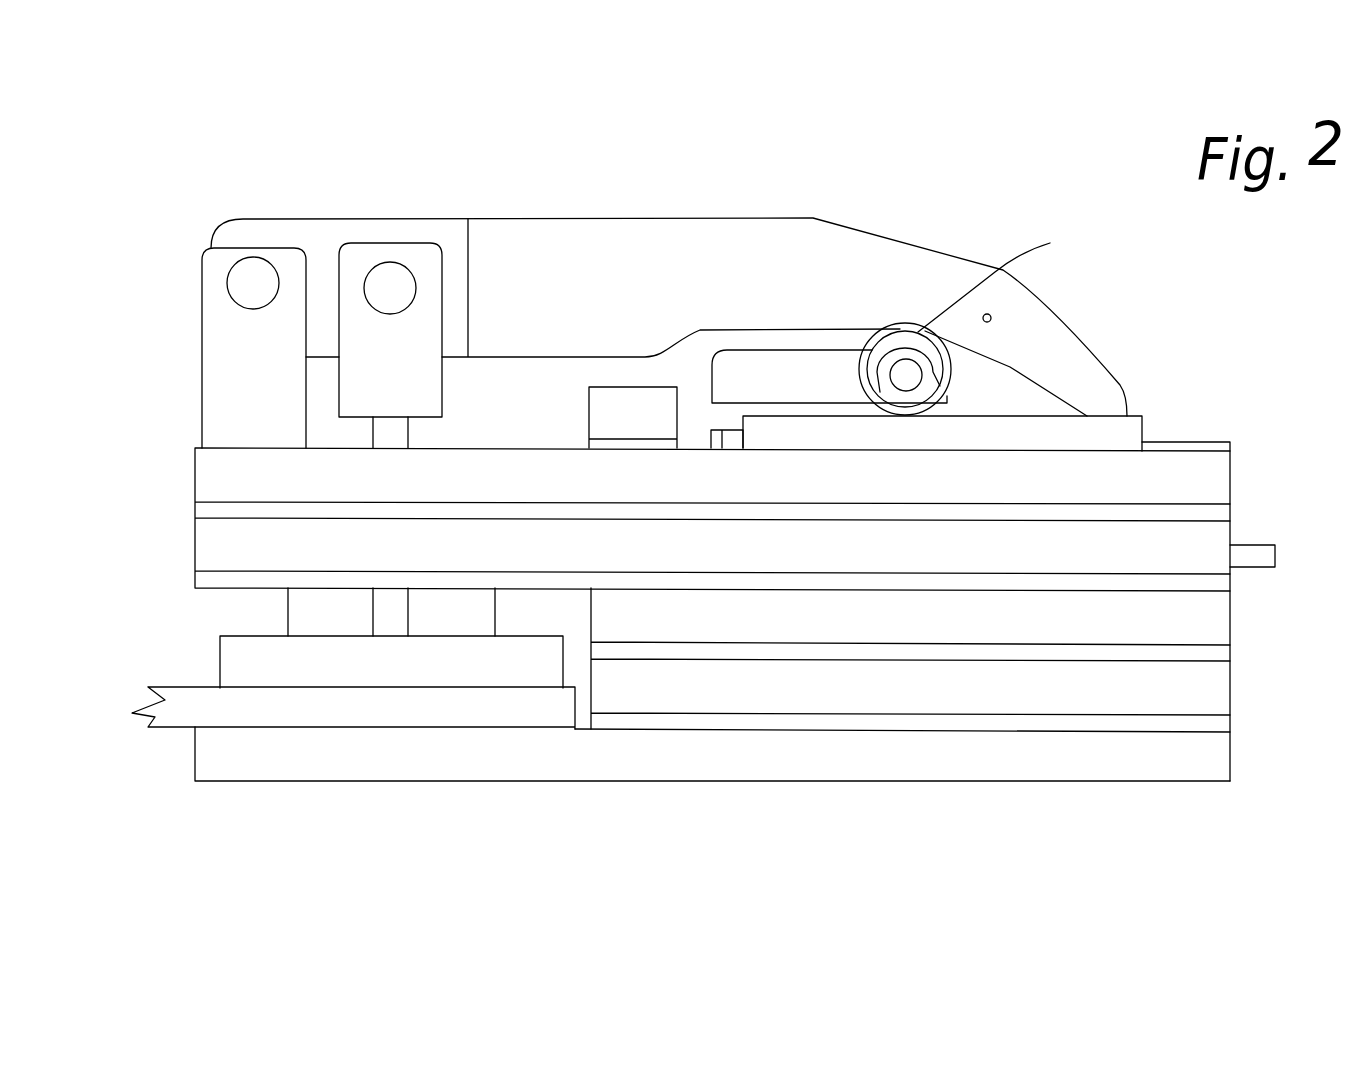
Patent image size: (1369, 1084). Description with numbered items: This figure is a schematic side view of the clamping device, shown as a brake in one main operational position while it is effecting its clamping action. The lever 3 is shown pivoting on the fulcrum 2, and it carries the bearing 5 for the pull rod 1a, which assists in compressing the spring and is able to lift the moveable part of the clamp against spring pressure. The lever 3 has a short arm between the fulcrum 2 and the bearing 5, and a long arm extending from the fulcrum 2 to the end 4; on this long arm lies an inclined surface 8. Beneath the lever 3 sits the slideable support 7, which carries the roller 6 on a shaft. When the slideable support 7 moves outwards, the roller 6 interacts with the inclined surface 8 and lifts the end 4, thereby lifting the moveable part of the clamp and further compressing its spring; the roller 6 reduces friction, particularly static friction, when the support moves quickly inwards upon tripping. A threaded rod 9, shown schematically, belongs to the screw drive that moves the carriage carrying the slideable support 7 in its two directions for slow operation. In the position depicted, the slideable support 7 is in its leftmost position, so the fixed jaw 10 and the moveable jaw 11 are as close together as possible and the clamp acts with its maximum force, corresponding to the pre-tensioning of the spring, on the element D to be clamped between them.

The fulcrum 2 is at (235, 287).
The lever 3 is at (578, 247).
The bearing 5 is at (372, 280).
The pull rod 1a is at (390, 432).
The slideable support 7 is at (755, 377).
The roller 6 is at (996, 274).
The inclined surface 8 is at (1010, 367).
The end of lever 4 is at (1108, 403).
The threaded rod 9 is at (1263, 542).
The moveable jaw 11 is at (228, 665).
The fixed jaw 10 is at (225, 758).
The element to be clamped D is at (272, 697).